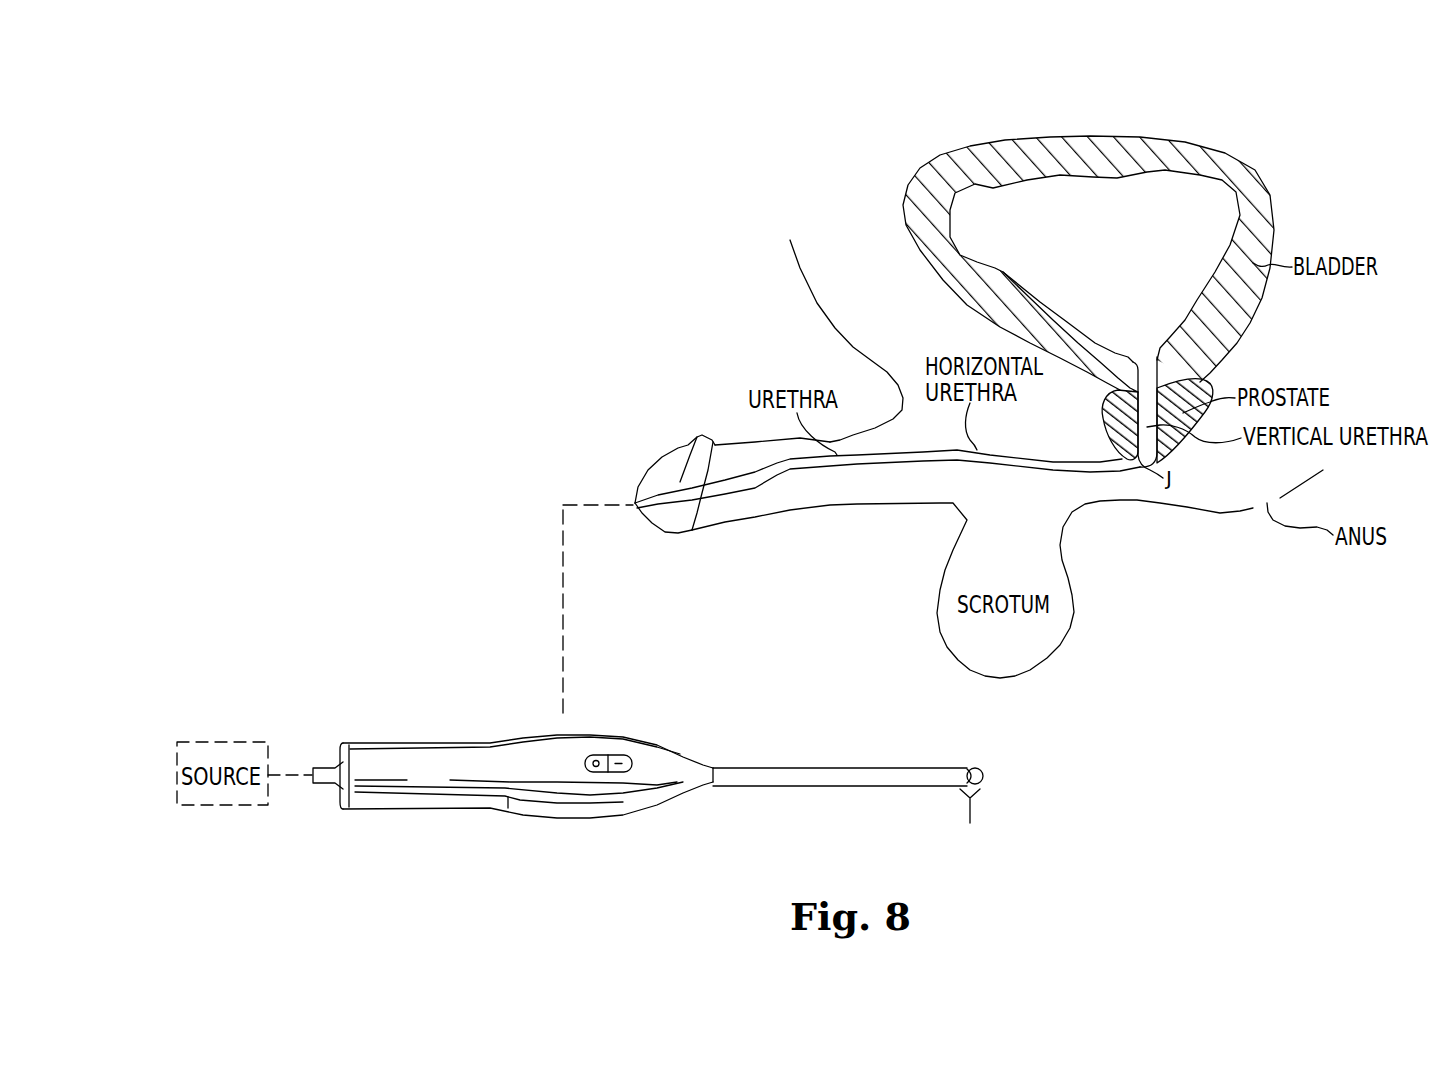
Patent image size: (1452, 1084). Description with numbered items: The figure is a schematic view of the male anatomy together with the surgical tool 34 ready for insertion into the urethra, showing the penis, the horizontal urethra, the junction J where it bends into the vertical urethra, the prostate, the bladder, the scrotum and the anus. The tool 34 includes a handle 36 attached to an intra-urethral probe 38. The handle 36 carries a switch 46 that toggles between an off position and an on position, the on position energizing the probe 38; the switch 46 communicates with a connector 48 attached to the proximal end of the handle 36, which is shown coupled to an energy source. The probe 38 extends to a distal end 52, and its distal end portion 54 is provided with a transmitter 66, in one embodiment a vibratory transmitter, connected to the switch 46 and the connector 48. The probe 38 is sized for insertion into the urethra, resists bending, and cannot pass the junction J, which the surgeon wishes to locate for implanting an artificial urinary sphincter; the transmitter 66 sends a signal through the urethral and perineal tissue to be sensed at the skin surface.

The surgical tool 34 is at (455, 703).
The handle 36 is at (467, 768).
The intra-urethral probe 38 is at (830, 767).
The switch 46 is at (600, 755).
The connector 48 is at (327, 778).
The distal end 52 is at (983, 775).
The distal end portion 54 is at (970, 818).
The transmitter 66 is at (973, 767).